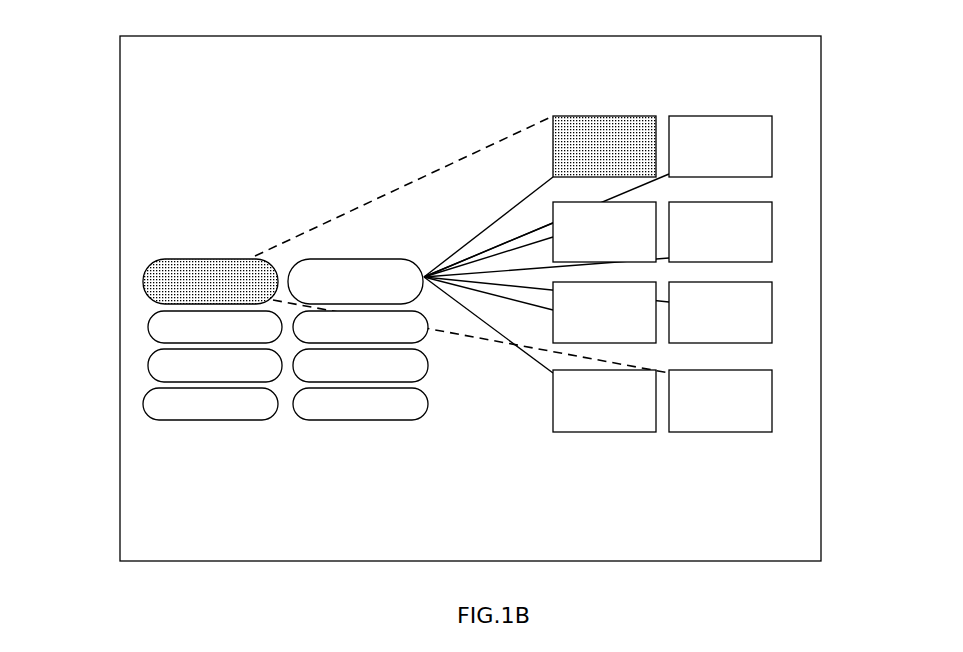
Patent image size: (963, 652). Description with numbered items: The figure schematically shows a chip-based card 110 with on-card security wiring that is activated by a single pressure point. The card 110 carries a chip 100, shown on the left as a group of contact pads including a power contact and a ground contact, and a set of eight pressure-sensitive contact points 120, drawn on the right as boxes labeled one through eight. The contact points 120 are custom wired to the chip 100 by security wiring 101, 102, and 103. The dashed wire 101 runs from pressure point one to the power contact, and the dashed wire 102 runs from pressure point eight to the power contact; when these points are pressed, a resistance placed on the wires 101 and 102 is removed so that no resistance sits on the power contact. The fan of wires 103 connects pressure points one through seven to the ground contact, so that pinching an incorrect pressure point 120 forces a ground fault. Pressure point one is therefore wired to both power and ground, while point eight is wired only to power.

The chip 100 is at (102, 266).
The security wiring to C1 from pressure point 1 101 is at (398, 193).
The security wiring to C1 from pressure point 8 102 is at (495, 342).
The ground wires 103 is at (427, 272).
The chip-based card 110 is at (483, 67).
The pressure-sensitive contact points 120 is at (828, 128).